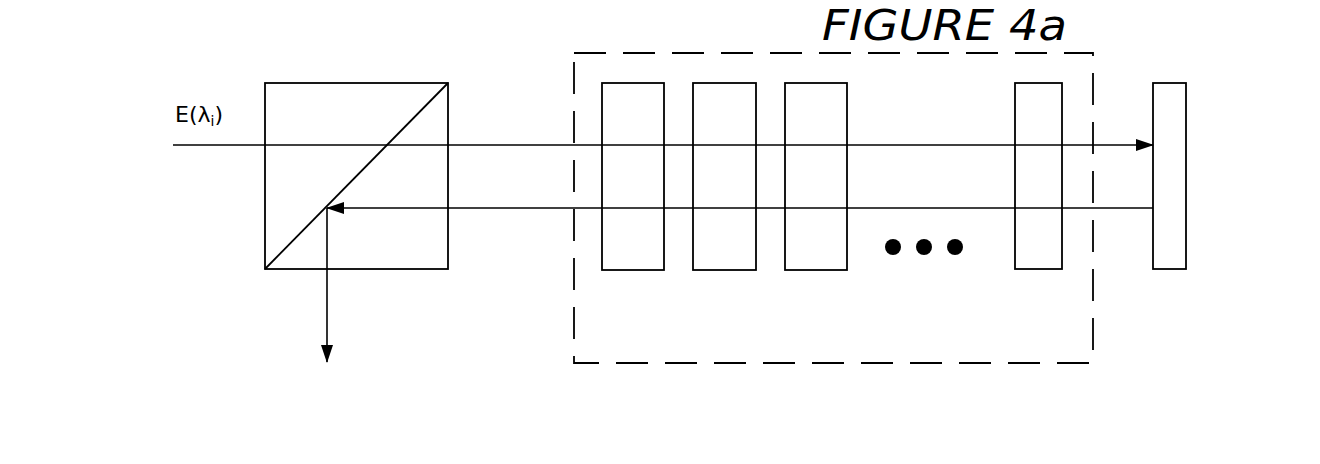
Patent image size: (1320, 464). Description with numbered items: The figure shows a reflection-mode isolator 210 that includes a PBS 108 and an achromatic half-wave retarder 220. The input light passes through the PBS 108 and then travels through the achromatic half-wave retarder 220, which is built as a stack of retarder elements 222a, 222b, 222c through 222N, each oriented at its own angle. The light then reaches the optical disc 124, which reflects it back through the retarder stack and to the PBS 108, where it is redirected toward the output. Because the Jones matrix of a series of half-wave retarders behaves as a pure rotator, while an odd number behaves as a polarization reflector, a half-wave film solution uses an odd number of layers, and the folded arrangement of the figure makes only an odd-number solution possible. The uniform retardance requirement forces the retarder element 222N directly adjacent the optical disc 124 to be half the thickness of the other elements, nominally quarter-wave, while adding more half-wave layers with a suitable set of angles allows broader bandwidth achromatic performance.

The PBS 108 is at (297, 83).
The optical disc 124 is at (1186, 113).
The reflection-mode isolator 210 is at (416, 389).
The achromatic half-wave retarder 220 is at (1088, 354).
The retarder element 222a is at (610, 201).
The retarder element 222b is at (701, 201).
The retarder element 222c is at (793, 201).
The retarder element 222N is at (1023, 175).